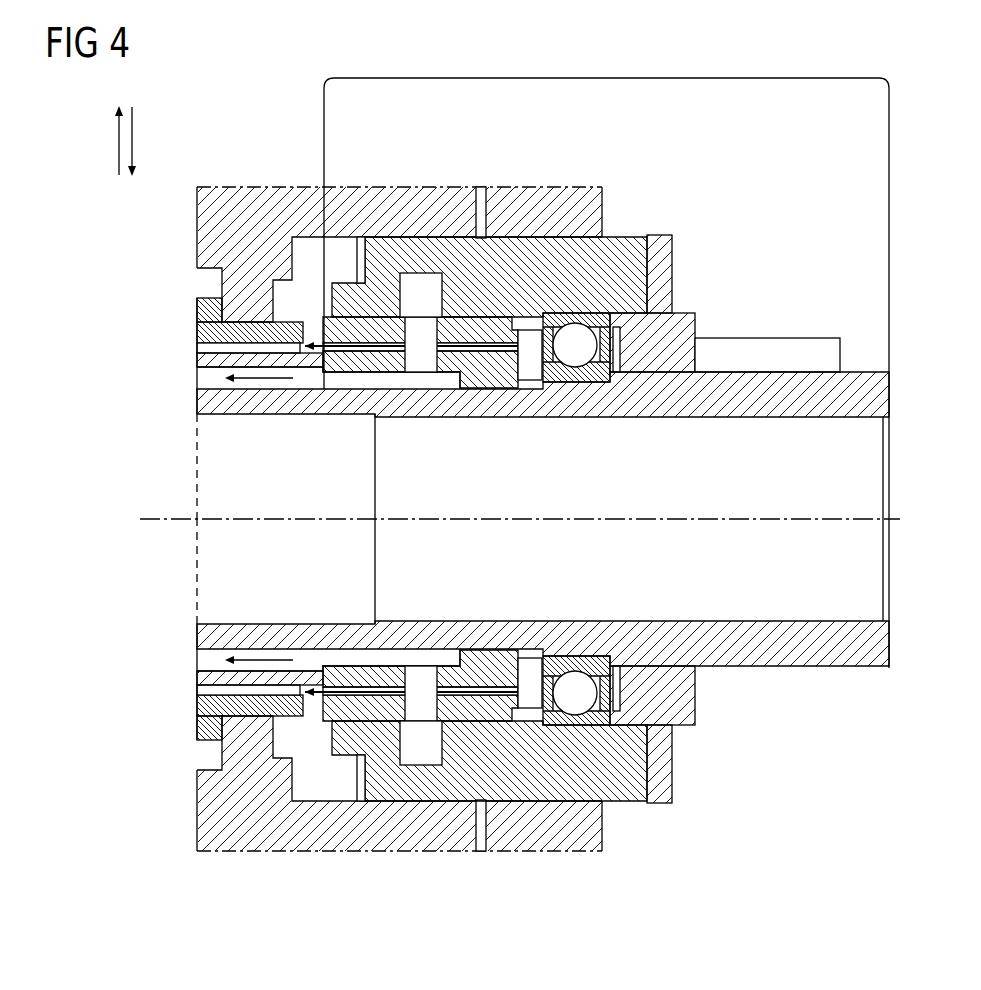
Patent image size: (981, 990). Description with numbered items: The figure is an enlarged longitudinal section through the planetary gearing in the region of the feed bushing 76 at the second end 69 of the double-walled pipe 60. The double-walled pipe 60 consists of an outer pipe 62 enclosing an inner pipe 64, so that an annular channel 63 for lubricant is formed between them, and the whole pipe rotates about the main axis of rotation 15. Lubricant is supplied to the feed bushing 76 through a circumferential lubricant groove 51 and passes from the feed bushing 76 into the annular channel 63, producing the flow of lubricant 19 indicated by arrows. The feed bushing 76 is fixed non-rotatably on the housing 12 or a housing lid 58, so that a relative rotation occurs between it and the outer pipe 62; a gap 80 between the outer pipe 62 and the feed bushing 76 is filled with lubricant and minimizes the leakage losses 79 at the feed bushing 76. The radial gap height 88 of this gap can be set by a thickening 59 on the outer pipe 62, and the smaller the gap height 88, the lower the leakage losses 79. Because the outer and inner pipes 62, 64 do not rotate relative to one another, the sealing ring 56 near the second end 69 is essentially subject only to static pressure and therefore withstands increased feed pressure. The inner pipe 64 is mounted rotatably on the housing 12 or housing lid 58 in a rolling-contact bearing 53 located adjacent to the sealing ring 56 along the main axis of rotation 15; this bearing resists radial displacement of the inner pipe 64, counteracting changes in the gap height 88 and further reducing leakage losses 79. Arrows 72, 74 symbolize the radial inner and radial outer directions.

The housing 12 is at (522, 300).
The main axis of rotation 15 is at (148, 519).
The flow of lubricant 19 is at (258, 382).
The circumferential lubricant groove 51 is at (426, 284).
The rolling-contact bearing 53 is at (590, 308).
The sealing ring 56 is at (483, 385).
The housing lid 58 is at (625, 277).
The thickening 59 is at (447, 322).
The double-walled pipe 60 is at (197, 358).
The outer pipe 62 is at (205, 680).
The annular channel 63 is at (210, 660).
The inner pipe 64 is at (210, 636).
The second end 69 is at (613, 78).
The arrow indicating radial inner direction 72 is at (119, 150).
The arrow indicating radial outer direction 74 is at (132, 137).
The feed bushing 76 is at (500, 332).
The leakage losses 79 is at (320, 312).
The gap 80 is at (392, 322).
The gap height 88 is at (530, 519).